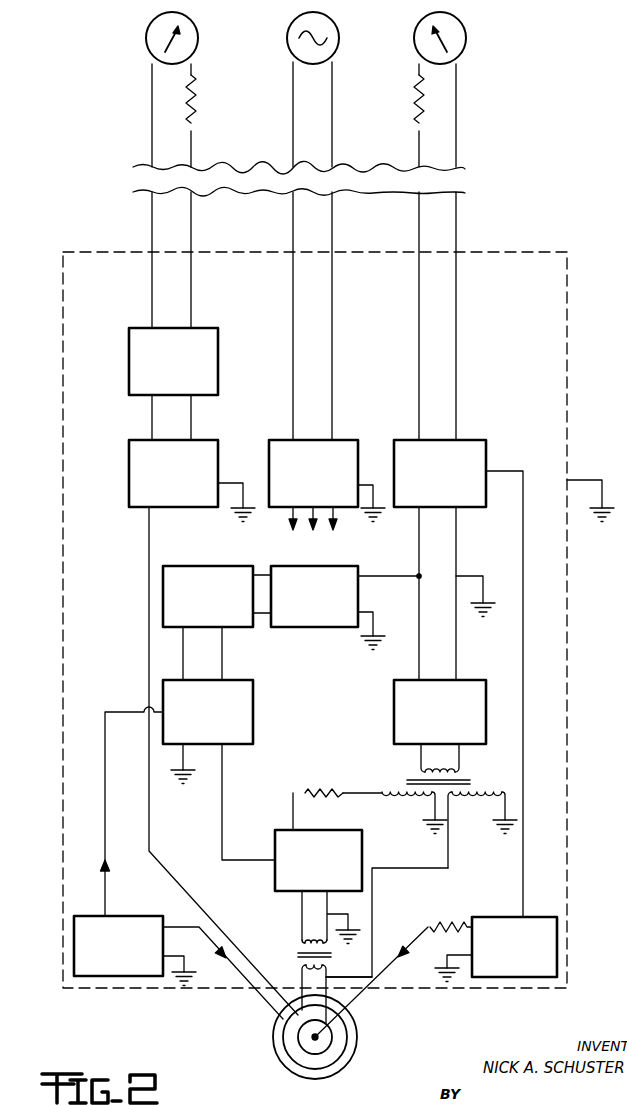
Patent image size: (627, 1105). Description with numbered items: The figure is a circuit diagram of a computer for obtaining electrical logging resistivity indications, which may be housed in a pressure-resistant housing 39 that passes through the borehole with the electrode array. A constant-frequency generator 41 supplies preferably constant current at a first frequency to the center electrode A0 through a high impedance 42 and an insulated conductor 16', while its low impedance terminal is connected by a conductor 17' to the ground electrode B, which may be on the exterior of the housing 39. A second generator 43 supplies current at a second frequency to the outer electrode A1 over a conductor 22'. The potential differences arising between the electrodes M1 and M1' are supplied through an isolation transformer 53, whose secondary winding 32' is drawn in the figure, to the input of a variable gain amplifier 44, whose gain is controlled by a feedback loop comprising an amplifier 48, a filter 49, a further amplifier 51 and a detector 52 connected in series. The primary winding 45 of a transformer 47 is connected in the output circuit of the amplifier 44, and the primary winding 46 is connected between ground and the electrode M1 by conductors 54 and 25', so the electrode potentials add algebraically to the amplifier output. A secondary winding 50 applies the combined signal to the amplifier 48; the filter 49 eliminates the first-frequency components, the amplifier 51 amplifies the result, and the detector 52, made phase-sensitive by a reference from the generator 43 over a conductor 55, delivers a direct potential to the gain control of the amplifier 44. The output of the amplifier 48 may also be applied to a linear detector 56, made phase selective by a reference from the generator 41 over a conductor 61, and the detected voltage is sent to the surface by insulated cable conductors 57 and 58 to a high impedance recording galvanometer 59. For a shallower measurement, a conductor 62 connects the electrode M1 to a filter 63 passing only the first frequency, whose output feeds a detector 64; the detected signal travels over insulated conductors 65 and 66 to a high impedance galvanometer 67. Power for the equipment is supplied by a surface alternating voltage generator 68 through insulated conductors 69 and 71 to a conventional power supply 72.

The high impedance galvanometer 67 is at (198, 46).
The alternating voltage generator 68 is at (339, 47).
The high impedance recording galvanometer 59 is at (466, 45).
The insulated conductor 71 is at (293, 124).
The insulated conductor 69 is at (332, 127).
The insulated conductor 66 is at (152, 223).
The insulated conductor 65 is at (191, 228).
The insulated cable conductor 58 is at (419, 222).
The insulated cable conductor 57 is at (456, 224).
The detector 64 is at (218, 376).
The filter 63 is at (205, 440).
The power supply 72 is at (340, 440).
The linear detector 56 is at (470, 440).
The conductor 61 is at (523, 640).
The amplifier 51 is at (235, 627).
The filter 49 is at (308, 627).
The detector 52 is at (253, 725).
The conductor 55 is at (105, 787).
The amplifier 48 is at (394, 720).
The secondary winding 50 is at (446, 773).
The transformer 47 is at (407, 780).
The primary winding 45 is at (405, 802).
The primary winding 46 is at (489, 802).
The conductor 54 is at (413, 868).
The variable gain amplifier 44 is at (362, 856).
The isolation transformer 53 is at (296, 953).
The transformer secondary winding 32' is at (296, 993).
The conductor 25' is at (349, 965).
The conductor 62 is at (196, 900).
The conductor 22' is at (223, 977).
The second generator 43 is at (130, 916).
The constant-frequency generator 41 is at (535, 917).
The ground electrode B is at (442, 969).
The high impedance 42 is at (446, 927).
The conductor 17' is at (450, 945).
The insulated conductor 16' is at (371, 982).
The pressure-resistant housing 39 is at (567, 926).
The outer electrode A1 is at (282, 1064).
The electrode M1 is at (324, 1049).
The electrode M1' is at (315, 1062).
The center electrode A0 is at (318, 1041).